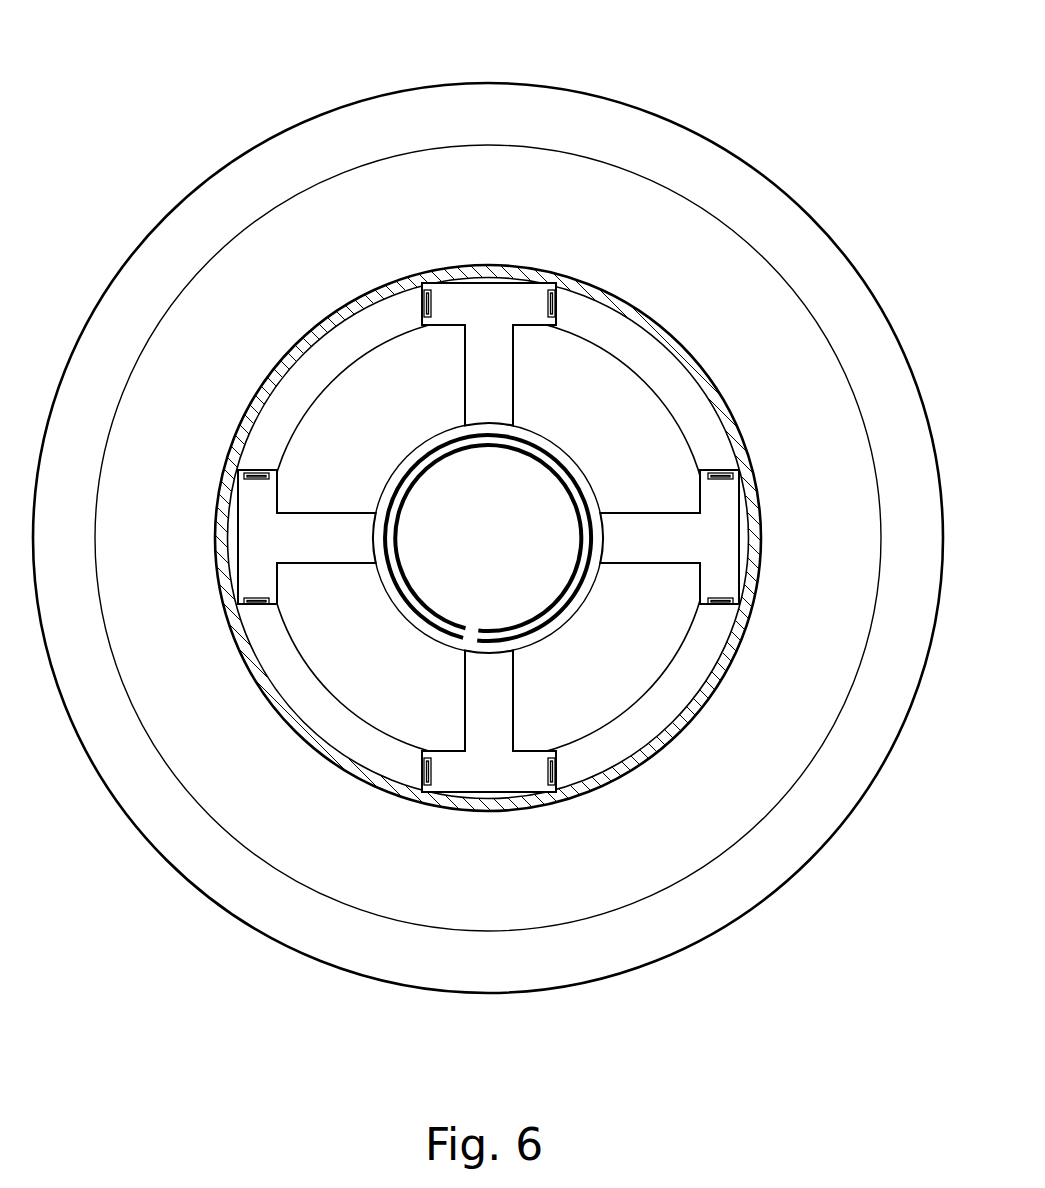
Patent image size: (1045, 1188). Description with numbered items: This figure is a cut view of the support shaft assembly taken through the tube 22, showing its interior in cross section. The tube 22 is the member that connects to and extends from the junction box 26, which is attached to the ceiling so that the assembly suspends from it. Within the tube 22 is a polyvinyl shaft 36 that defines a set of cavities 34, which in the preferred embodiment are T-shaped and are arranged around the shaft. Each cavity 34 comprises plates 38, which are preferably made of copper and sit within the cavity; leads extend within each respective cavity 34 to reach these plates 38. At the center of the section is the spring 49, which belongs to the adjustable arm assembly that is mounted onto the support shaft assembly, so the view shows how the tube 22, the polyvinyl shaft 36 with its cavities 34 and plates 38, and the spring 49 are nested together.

The tube 22 is at (333, 307).
The junction box 26 is at (765, 170).
The cavities 34 is at (502, 297).
The polyvinyl shaft 36 is at (645, 697).
The plates 38 is at (430, 290).
The spring 49 is at (567, 483).